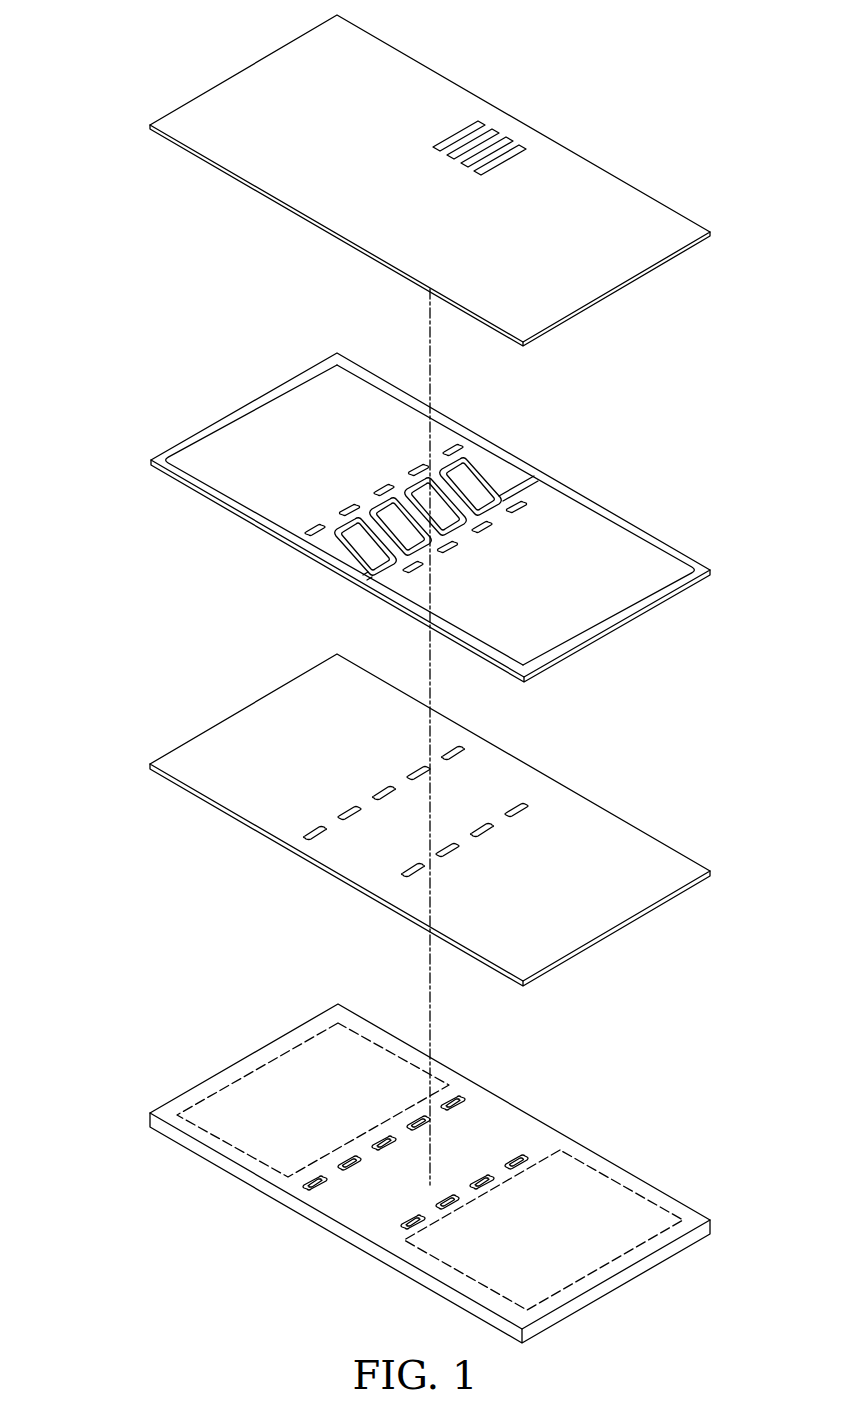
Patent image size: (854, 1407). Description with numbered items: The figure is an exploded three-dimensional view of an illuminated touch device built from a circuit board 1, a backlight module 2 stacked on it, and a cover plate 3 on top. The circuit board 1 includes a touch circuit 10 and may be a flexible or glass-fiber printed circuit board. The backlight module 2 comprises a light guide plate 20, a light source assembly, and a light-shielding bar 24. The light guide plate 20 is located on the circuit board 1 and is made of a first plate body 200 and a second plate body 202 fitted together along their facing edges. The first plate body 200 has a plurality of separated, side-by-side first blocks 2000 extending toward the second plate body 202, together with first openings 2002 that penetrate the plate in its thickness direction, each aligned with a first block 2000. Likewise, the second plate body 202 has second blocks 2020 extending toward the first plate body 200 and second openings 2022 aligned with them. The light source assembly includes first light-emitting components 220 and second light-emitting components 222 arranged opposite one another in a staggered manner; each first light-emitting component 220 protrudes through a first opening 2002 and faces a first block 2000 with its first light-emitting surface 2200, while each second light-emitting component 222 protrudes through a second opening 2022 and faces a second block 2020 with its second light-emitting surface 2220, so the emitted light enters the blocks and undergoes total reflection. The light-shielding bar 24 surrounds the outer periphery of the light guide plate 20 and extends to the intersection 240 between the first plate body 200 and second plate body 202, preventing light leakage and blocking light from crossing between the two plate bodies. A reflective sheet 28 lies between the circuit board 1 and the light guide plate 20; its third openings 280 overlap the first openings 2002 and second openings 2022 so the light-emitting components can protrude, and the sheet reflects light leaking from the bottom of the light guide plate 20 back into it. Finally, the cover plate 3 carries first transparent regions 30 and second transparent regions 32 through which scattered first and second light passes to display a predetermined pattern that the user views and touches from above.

The circuit board 1 is at (430, 1157).
The touch circuit 10 is at (285, 1048).
The backlight module 2 is at (93, 437).
The cover plate 3 is at (430, 178).
The light guide plate 20 is at (430, 468).
The light-shielding bar 24 is at (401, 477).
The reflective sheet 28 is at (401, 820).
The first transparent region 30 is at (505, 145).
The second transparent region 32 is at (479, 102).
The first plate body 200 is at (344, 488).
The second plate body 202 is at (655, 560).
The first light-emitting component 220 is at (377, 1136).
The second light-emitting component 222 is at (490, 1139).
The intersection 240 is at (400, 486).
The third opening 280 is at (455, 750).
The first block 2000 is at (353, 568).
The first opening 2002 is at (399, 473).
The second block 2020 is at (446, 479).
The second opening 2022 is at (527, 493).
The first light-emitting surface 2200 is at (462, 1098).
The second light-emitting surface 2220 is at (512, 1148).